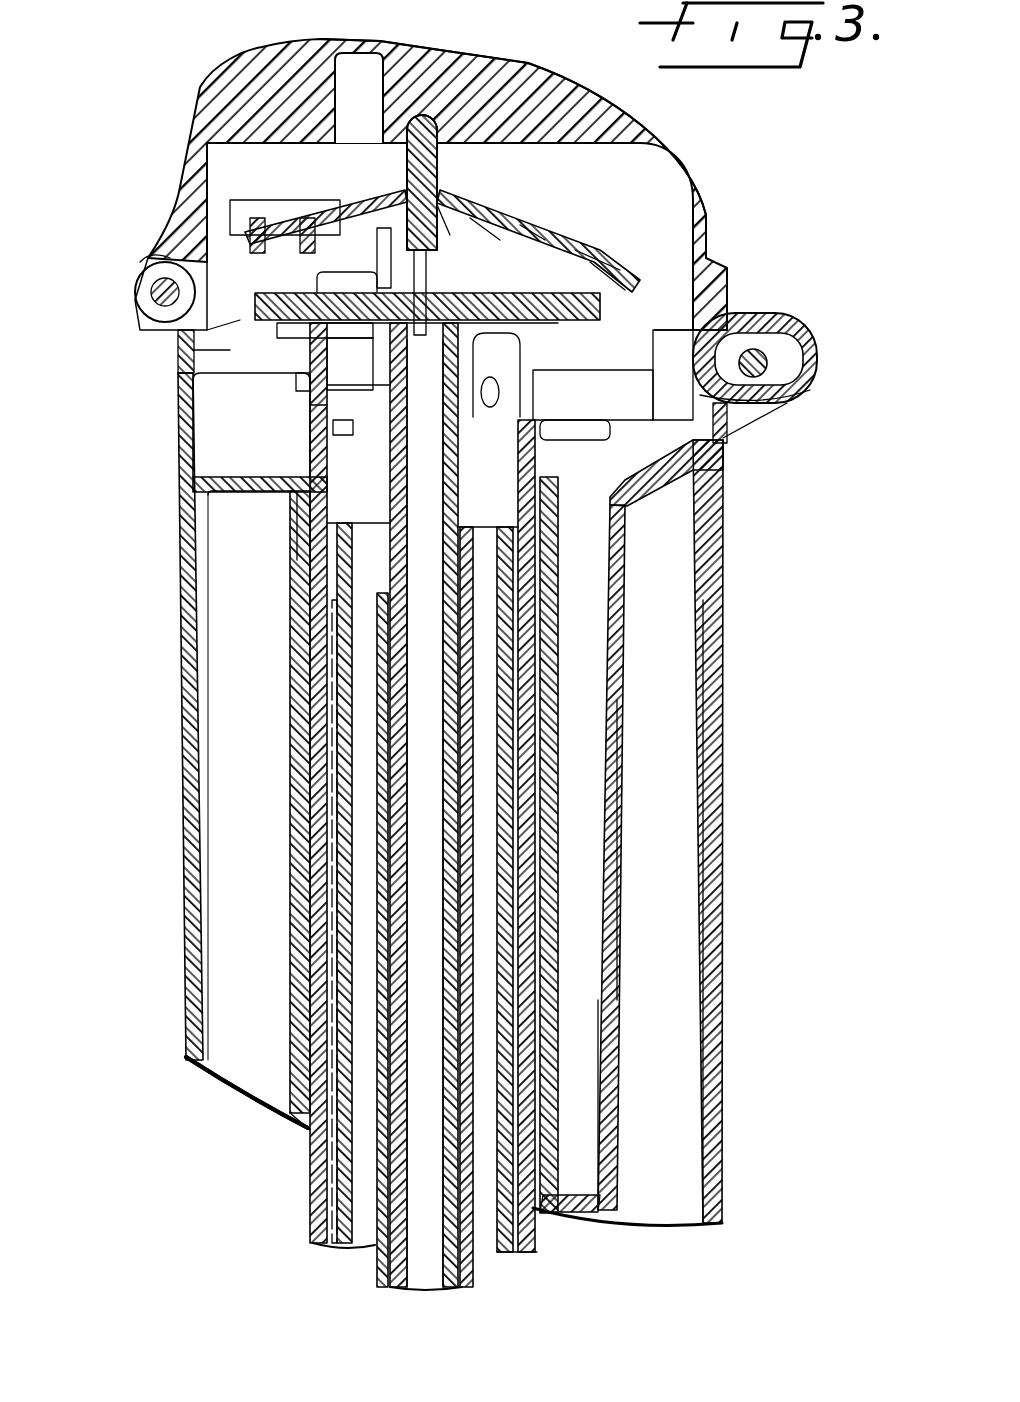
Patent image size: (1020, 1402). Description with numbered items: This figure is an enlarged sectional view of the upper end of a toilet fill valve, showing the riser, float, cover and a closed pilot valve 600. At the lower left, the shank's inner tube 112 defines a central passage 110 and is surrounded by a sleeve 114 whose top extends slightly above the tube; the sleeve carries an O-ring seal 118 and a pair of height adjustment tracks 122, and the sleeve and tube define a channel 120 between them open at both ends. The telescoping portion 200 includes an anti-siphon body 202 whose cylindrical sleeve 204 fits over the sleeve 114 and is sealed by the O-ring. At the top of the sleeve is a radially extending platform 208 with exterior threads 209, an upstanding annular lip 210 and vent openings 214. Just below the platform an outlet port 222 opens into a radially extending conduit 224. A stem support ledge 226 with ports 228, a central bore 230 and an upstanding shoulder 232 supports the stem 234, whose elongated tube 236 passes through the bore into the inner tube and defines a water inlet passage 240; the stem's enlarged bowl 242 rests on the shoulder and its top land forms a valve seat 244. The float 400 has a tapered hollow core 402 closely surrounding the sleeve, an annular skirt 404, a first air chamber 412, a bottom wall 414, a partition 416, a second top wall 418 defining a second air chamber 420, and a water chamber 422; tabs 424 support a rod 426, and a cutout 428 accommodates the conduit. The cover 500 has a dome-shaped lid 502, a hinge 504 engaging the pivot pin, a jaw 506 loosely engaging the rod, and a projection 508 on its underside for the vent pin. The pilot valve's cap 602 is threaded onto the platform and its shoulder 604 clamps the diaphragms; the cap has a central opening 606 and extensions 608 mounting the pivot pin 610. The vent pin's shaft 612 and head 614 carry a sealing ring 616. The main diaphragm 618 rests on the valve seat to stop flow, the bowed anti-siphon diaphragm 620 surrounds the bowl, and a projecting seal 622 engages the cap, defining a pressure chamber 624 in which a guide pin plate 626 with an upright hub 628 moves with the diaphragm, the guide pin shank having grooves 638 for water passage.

The central passage 110 is at (385, 666).
The inner tube 112 is at (385, 622).
The sleeve 114 is at (343, 1252).
The O-ring seal 118 is at (337, 567).
The channel 120 is at (360, 768).
The height adjustment tracks 122 is at (332, 990).
The telescoping portion 200 is at (312, 878).
The anti-siphon body 202 is at (188, 447).
The cylindrical sleeve 204 is at (314, 1225).
The platform 208 is at (238, 388).
The threads 209 is at (210, 358).
The annular lip 210 is at (215, 322).
The vent openings 214 is at (303, 368).
The outlet port 222 is at (499, 392).
The conduit 224 is at (640, 425).
The stem support ledge 226 is at (540, 460).
The ports 228 is at (338, 428).
The central bore 230 is at (478, 445).
The shoulder 232 is at (375, 418).
The stem 234 is at (468, 1282).
The elongated tube 236 is at (395, 1285).
The water inlet passage 240 is at (428, 1282).
The bowl 242 is at (327, 405).
The valve seat 244 is at (420, 340).
The float 400 is at (738, 790).
The hollow core 402 is at (296, 1128).
The annular skirt 404 is at (185, 1065).
The first air chamber 412 is at (218, 962).
The bottom wall 414 is at (587, 1197).
The partition 416 is at (617, 862).
The second top wall 418 is at (657, 492).
The second air chamber 420 is at (682, 995).
The water chamber 422 is at (600, 923).
The tabs 424 is at (808, 327).
The rod 426 is at (768, 362).
The cutout 428 is at (722, 305).
The cover 500 is at (690, 162).
The dome-shaped lid 502 is at (632, 106).
The hinge 504 is at (150, 320).
The jaw 506 is at (760, 395).
The projection 508 is at (425, 62).
The pilot valve 600 is at (573, 230).
The cap 602 is at (555, 235).
The shoulder 604 is at (610, 285).
The opening 606 is at (445, 200).
The extensions 608 is at (134, 292).
The pivot pin 610 is at (140, 272).
The shaft 612 is at (437, 126).
The head 614 is at (480, 215).
The sealing ring 616 is at (395, 222).
The main diaphragm 618 is at (605, 258).
The anti-siphon diaphragm 620 is at (560, 345).
The projecting seal 622 is at (585, 255).
The pressure chamber 624 is at (375, 245).
The guide pin plate 626 is at (290, 240).
The upright hub 628 is at (530, 215).
The grooves 638 is at (380, 335).